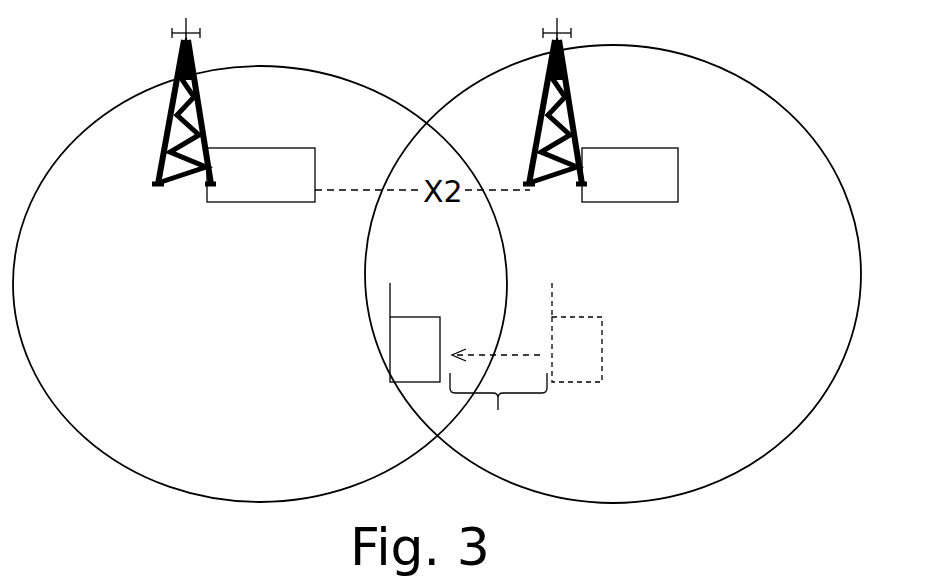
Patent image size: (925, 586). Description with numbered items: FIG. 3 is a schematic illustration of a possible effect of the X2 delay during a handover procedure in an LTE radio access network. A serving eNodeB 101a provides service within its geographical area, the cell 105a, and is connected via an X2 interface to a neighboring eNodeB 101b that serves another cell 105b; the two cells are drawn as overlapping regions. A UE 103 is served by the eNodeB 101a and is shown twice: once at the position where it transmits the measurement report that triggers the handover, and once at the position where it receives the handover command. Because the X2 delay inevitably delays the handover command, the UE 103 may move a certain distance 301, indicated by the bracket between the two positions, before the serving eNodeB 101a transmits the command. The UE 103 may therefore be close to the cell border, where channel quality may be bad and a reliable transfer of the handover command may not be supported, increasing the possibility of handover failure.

The cell 105b is at (260, 260).
The cell 105a is at (613, 251).
The neighboring eNodeB 101b is at (233, 147).
The serving eNodeB 101a is at (600, 144).
The UE 103 is at (534, 319).
The distance 301 is at (498, 411).